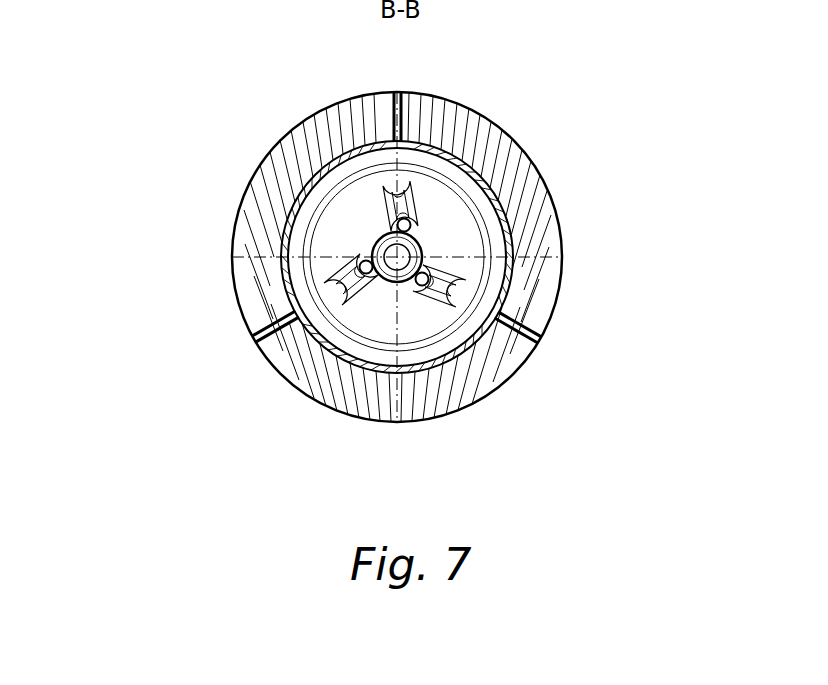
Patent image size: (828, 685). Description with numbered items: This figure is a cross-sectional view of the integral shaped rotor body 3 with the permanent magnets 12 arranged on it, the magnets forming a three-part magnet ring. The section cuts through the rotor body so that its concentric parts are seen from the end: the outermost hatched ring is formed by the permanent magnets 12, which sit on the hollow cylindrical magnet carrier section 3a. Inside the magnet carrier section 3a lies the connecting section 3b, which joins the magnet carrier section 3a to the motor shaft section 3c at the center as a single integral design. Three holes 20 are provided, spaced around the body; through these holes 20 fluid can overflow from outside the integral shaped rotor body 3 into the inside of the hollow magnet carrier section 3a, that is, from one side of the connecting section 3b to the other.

The integral shaped rotor body 3 is at (155, 157).
The magnet carrier section 3a is at (287, 235).
The connecting section 3b is at (353, 320).
The motor shaft section 3c is at (423, 262).
The permanent magnets 12 is at (280, 165).
The holes 20 is at (403, 226).